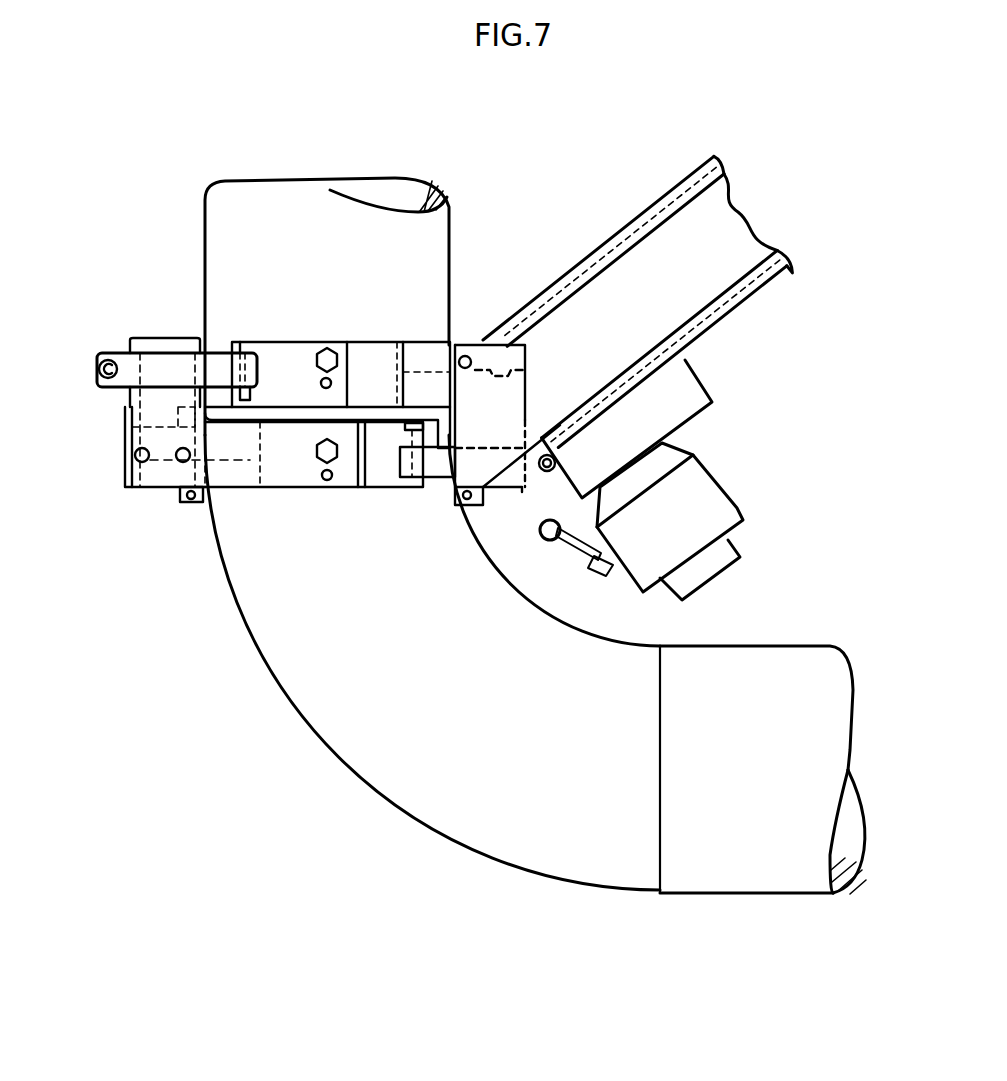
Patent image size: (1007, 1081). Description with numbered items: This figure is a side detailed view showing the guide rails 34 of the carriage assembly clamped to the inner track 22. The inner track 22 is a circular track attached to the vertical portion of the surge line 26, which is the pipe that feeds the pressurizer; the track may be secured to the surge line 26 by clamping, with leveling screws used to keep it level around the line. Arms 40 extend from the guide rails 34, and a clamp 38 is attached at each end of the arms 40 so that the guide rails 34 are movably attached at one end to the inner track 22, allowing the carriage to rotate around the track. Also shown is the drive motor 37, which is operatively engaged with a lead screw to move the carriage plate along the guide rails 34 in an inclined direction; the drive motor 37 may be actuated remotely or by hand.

The inner track 22 is at (127, 432).
The surge line 26 is at (433, 228).
The guide rails 34 is at (655, 204).
The drive motor 37 is at (735, 511).
The clamp 38 is at (113, 353).
The arms 40 is at (362, 342).